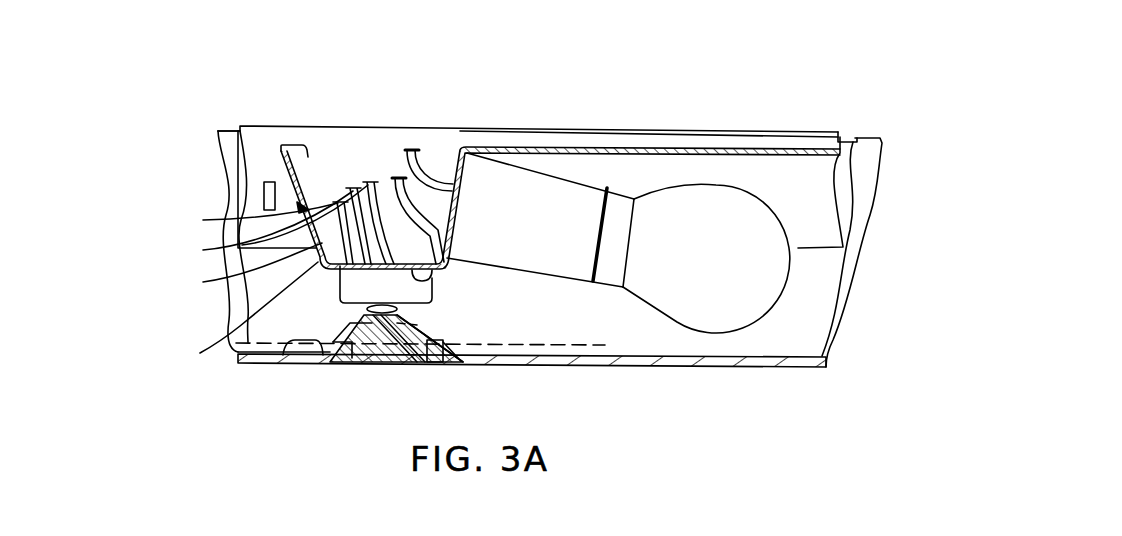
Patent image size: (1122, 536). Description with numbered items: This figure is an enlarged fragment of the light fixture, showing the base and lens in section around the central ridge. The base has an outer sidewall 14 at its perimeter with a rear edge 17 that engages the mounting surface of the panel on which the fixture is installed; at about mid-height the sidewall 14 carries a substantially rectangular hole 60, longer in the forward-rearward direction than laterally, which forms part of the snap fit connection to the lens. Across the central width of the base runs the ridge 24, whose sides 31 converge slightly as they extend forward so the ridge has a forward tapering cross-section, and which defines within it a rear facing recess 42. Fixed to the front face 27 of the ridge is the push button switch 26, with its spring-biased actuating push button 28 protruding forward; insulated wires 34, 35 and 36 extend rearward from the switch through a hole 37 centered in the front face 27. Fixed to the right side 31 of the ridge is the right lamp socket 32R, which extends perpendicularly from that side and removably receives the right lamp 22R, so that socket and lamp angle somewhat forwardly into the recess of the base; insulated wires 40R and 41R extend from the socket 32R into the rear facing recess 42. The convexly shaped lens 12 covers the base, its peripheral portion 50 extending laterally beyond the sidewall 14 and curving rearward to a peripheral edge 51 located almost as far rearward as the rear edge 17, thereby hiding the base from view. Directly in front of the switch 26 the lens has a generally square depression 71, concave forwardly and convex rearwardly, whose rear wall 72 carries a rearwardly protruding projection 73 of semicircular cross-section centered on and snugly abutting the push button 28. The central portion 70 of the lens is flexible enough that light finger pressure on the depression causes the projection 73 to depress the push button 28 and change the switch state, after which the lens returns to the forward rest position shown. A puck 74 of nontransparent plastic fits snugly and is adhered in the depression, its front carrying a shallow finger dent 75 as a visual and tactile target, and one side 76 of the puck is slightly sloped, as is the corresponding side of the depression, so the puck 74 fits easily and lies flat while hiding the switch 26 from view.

The lens 12 is at (257, 302).
The outer sidewall 14 is at (243, 158).
The rear edge 17 is at (852, 133).
The right lamp 22R is at (749, 188).
The central longitudinally extending ridge 24 is at (300, 208).
The push button switch 26 is at (450, 318).
The front face of the ridge 27 is at (241, 320).
The actuating push button 28 is at (455, 335).
The sides of the ridge 31 is at (452, 243).
The right lamp socket 32R is at (563, 272).
The insulated wire 34 is at (279, 240).
The insulated wire 35 is at (268, 224).
The insulated wire 36 is at (259, 233).
The hole 37 is at (414, 284).
The insulated wire 40R is at (398, 172).
The insulated wire 41R is at (442, 150).
The rear facing recess 42 is at (300, 146).
The peripheral portion of the lens 50 is at (223, 172).
The peripheral edge of the lens 51 is at (222, 131).
The rectangular hole 60 is at (283, 212).
The central portion of the lens 70 is at (305, 360).
The depression 71 is at (437, 366).
The rear wall of the depression 72 is at (418, 366).
The projection 73 is at (362, 313).
The puck 74 is at (350, 363).
The finger dent 75 is at (395, 367).
The sloped side of the puck 76 is at (285, 355).